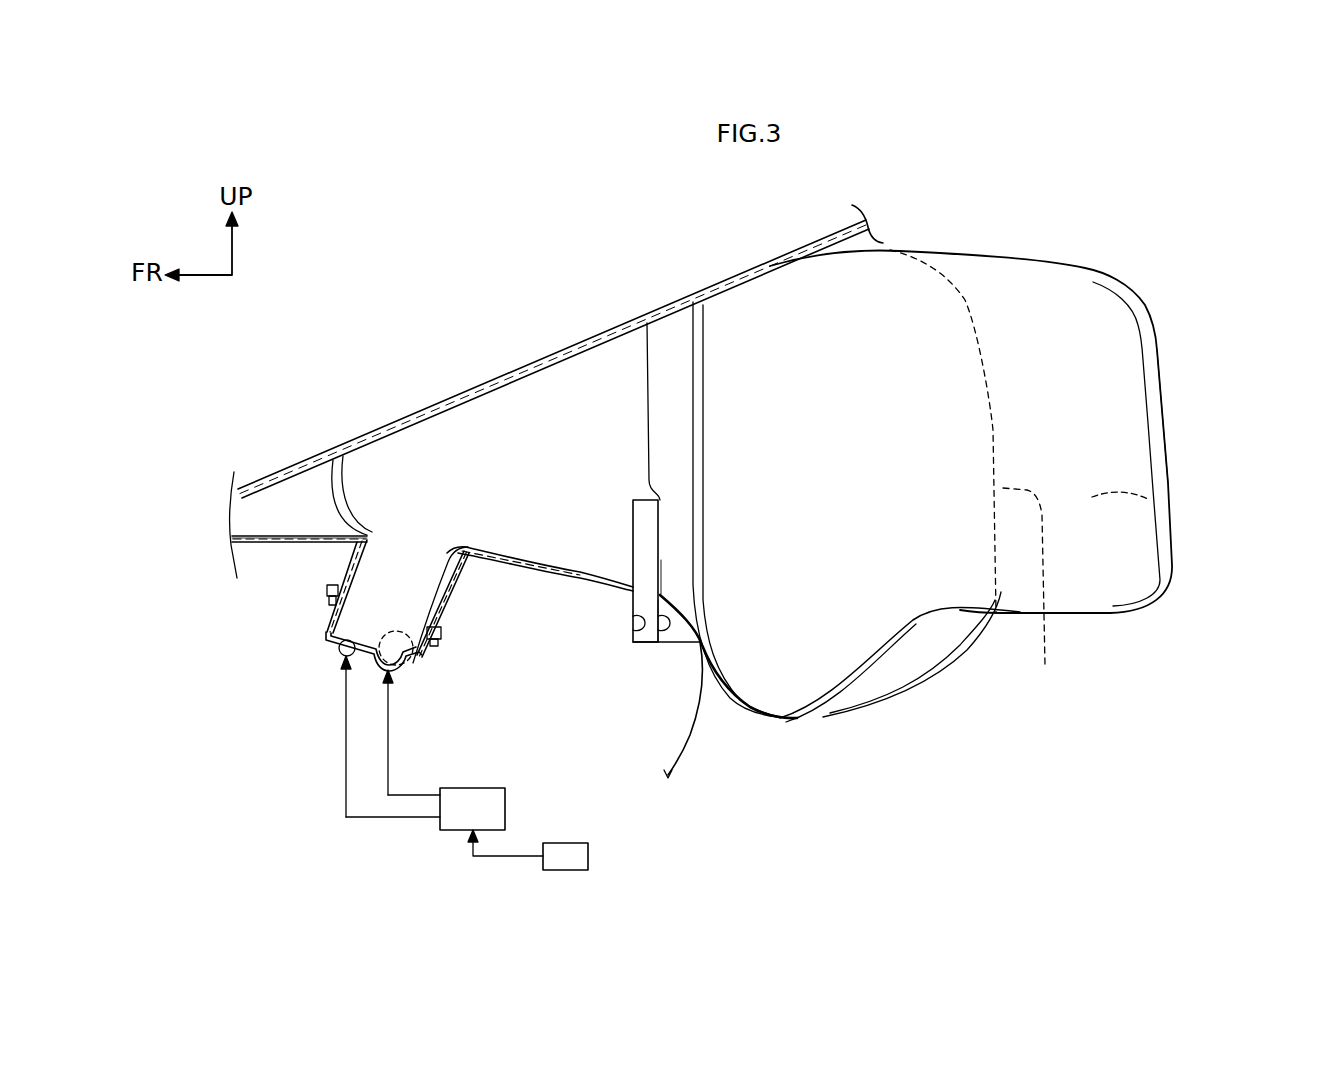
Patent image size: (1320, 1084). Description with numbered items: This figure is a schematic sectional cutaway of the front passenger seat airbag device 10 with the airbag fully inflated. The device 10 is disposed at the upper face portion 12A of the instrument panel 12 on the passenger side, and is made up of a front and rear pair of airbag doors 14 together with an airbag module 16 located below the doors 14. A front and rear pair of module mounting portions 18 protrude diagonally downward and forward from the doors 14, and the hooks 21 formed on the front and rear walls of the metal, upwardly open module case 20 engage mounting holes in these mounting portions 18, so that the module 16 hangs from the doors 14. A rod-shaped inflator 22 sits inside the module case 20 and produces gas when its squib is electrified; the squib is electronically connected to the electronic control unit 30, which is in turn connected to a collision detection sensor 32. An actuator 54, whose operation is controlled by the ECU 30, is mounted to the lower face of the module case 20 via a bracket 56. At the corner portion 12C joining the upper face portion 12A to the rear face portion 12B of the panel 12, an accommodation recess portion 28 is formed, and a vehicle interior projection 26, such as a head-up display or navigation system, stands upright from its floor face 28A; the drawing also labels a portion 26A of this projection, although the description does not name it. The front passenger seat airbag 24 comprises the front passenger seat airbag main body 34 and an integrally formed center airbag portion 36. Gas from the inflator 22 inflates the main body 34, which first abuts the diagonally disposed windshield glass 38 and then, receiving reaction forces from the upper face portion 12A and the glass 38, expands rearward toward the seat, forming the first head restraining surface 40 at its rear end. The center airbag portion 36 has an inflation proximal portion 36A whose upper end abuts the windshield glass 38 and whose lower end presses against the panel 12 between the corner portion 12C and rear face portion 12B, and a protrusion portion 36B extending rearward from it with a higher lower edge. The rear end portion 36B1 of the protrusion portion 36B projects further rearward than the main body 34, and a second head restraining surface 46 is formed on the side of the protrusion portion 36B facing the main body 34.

The front passenger seat airbag device 10 is at (226, 758).
The instrument panel 12 is at (708, 733).
The upper face portion 12A is at (278, 533).
The rear face portion 12B is at (680, 758).
The corner portion 12C is at (678, 605).
The airbag doors 14 is at (326, 533).
The airbag module 16 is at (311, 646).
The module mounting portions 18 is at (352, 560).
The module case 20 is at (330, 613).
The hooks 21 is at (328, 587).
The inflator 22 is at (427, 657).
The front passenger seat airbag 24 is at (1060, 244).
The vehicle interior projection 26 is at (626, 503).
The gas ejection portion 26A is at (690, 585).
The accommodation recess portion 28 is at (633, 630).
The floor face 28A is at (678, 642).
The electronic control unit 30 is at (480, 788).
The collision detection sensor 32 is at (567, 843).
The front passenger seat airbag main body 34 is at (948, 669).
The center airbag portion 36 is at (1171, 363).
The inflation proximal portion 36A is at (807, 653).
The protrusion portion 36B is at (1102, 592).
The rear end portion 36B1 is at (1168, 457).
The windshield glass 38 is at (522, 360).
The first head restraining surface 40 is at (1033, 591).
The second head restraining surface 46 is at (1150, 500).
The actuator 54 is at (340, 657).
The bracket 56 is at (330, 650).